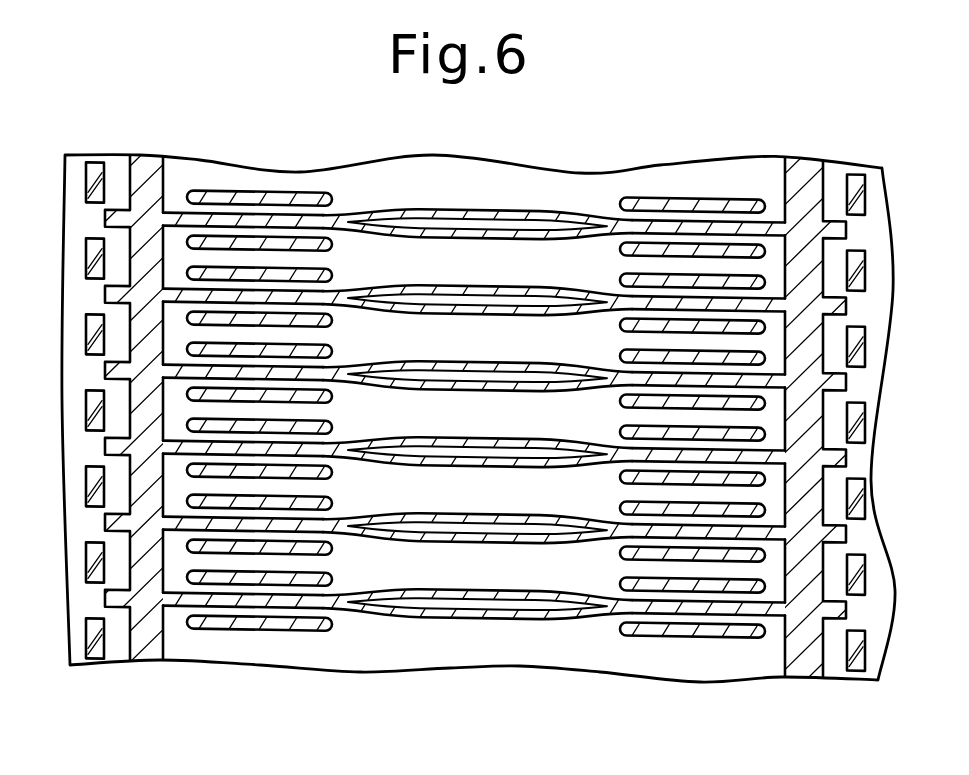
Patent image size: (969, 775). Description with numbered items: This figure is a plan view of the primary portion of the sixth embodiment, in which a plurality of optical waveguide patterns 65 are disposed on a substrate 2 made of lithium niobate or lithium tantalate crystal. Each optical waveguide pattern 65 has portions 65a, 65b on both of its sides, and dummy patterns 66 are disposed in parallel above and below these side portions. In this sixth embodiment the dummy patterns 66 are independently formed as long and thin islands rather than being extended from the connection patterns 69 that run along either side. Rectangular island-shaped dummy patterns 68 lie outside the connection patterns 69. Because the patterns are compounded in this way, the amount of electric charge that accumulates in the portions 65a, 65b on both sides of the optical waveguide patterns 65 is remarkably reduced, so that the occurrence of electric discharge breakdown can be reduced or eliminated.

The substrate 2 is at (408, 652).
The optical waveguide pattern 65 is at (475, 435).
The side portion of optical waveguide pattern 65a is at (282, 604).
The side portion of optical waveguide pattern 65b is at (727, 615).
The dummy pattern 66 is at (242, 582).
The rectangular island-shaped dummy pattern 68 is at (88, 655).
The connection pattern 69 is at (140, 645).